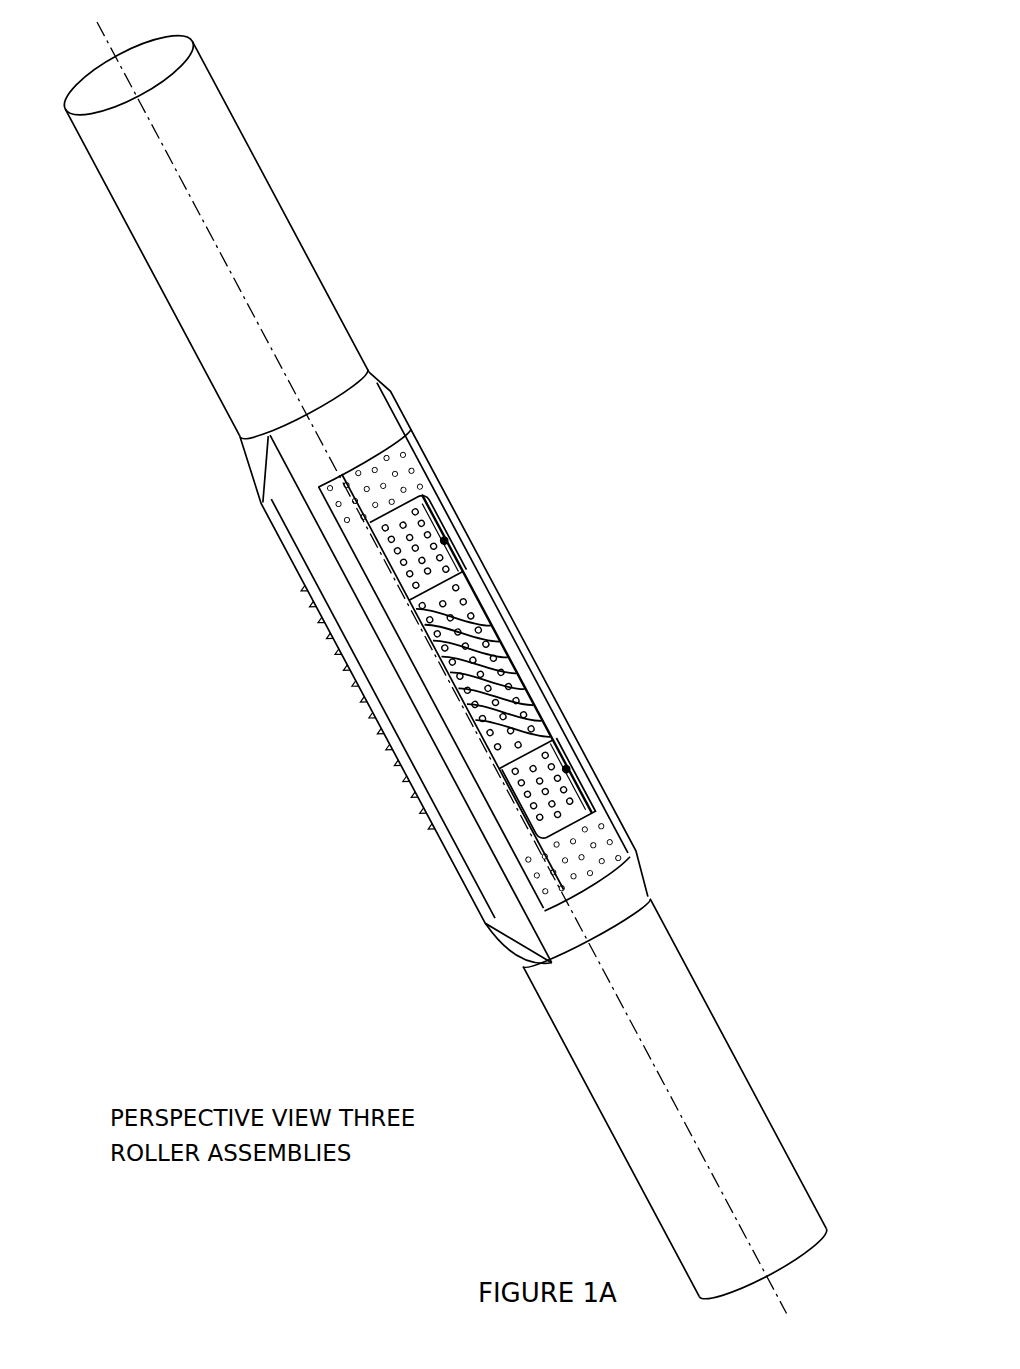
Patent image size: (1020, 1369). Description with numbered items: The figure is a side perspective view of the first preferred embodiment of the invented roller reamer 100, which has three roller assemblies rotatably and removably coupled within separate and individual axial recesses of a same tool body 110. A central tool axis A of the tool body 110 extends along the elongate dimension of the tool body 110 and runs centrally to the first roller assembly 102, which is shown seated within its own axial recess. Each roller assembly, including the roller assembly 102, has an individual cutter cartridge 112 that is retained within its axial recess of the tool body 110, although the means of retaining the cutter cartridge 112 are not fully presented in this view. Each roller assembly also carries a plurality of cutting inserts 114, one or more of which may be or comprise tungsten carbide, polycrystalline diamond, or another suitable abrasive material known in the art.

The roller reamer 100 is at (309, 182).
The tool body 110 is at (355, 343).
The roller assembly 102 is at (606, 631).
The cutter cartridge 112 is at (456, 640).
The cutting inserts 114 is at (500, 720).
The tool axis A is at (160, 143).